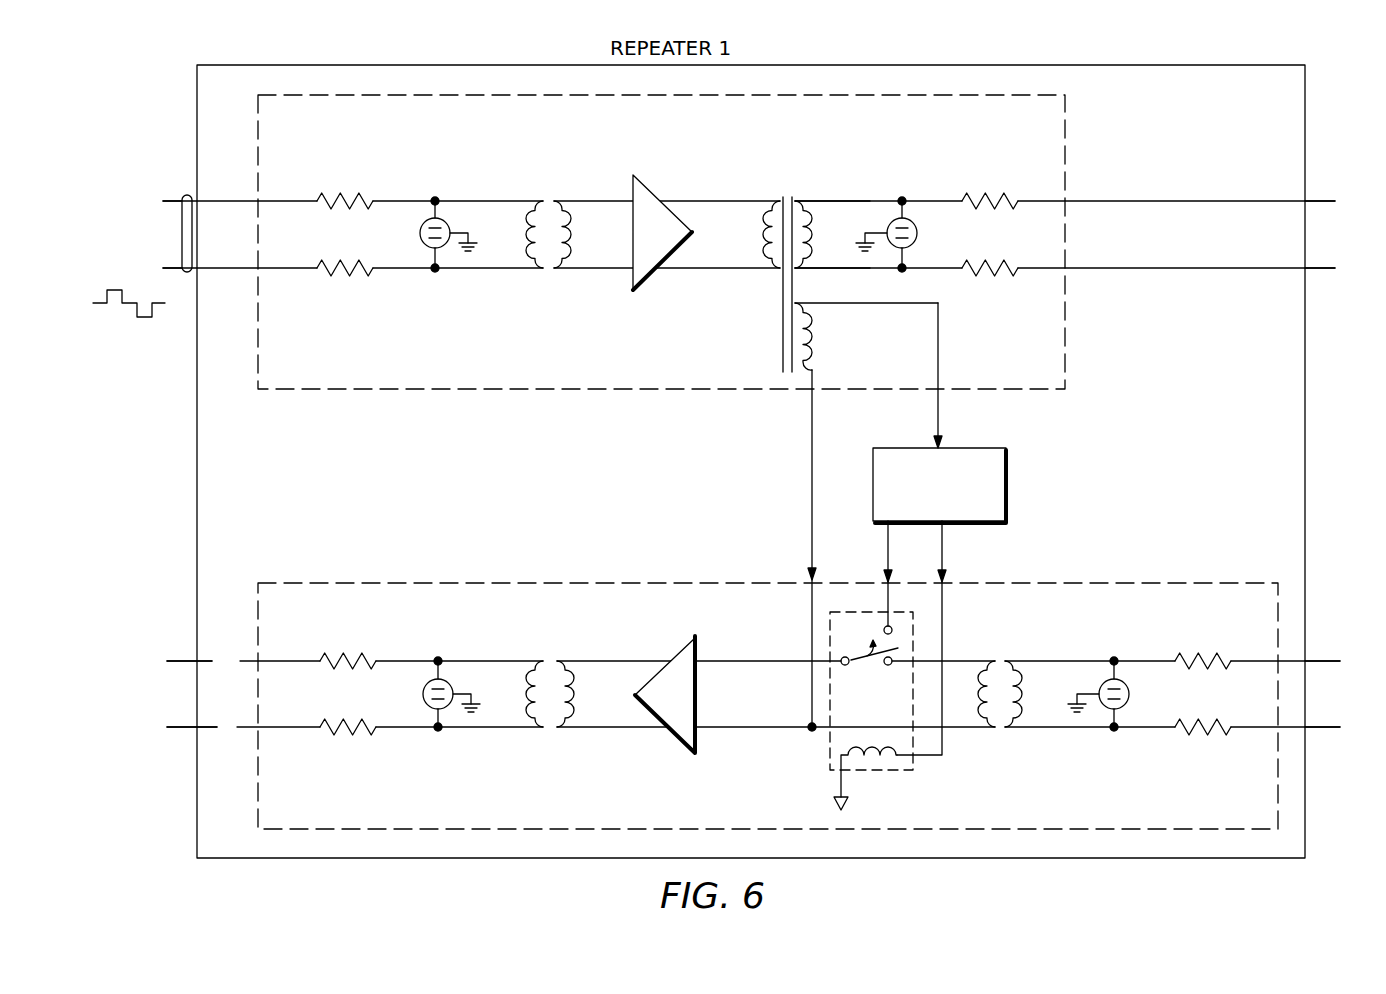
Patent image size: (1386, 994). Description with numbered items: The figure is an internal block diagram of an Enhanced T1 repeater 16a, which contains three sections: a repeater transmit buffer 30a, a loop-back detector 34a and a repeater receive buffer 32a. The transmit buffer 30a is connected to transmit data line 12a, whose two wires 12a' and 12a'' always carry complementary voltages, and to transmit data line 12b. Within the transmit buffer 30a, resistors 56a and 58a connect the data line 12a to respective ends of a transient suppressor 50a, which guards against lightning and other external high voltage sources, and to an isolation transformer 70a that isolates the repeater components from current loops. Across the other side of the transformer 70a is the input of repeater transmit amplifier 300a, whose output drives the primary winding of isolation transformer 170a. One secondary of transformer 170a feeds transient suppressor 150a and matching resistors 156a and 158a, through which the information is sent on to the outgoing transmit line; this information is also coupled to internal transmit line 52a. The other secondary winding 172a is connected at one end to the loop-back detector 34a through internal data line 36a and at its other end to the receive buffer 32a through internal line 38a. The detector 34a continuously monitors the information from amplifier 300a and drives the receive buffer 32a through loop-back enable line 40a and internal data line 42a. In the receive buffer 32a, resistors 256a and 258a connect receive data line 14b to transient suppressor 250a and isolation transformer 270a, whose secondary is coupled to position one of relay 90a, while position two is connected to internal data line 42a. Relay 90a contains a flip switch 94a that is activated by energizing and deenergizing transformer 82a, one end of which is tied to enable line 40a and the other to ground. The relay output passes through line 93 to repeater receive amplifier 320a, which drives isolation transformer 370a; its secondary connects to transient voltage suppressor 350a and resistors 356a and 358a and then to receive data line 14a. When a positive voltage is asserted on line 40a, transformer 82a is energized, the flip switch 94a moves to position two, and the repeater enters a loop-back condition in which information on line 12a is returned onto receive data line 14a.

The repeater 16a is at (1305, 115).
The transmit data line 12a is at (166, 206).
The wire 12a' is at (154, 187).
The wire 12a'' is at (152, 254).
The transmit data line 12b is at (1318, 268).
The receive data line 14a is at (178, 728).
The receive data line 14b is at (1320, 727).
The repeater transmit buffer 30a is at (1067, 128).
The repeater receive buffer 32a is at (458, 590).
The resistor 56a is at (338, 200).
The resistor 58a is at (338, 270).
The transient suppressor 50a is at (420, 233).
The isolation transformer 70a is at (559, 200).
The repeater transmit amplifier 300a is at (652, 275).
The isolation transformer 170a is at (801, 200).
The secondary winding 172a is at (818, 343).
The internal transmit line 52a is at (835, 268).
The transient suppressor 150a is at (917, 233).
The matching resistor 156a is at (1005, 196).
The matching resistor 158a is at (1000, 272).
The internal data line 36a is at (940, 430).
The internal line 38a is at (812, 508).
The loop-back detector 34a is at (1006, 490).
The internal data line 42a is at (886, 561).
The loop-back enable line 40a is at (943, 552).
The resistor 356a is at (341, 660).
The resistor 358a is at (341, 729).
The transient voltage suppressor 350a is at (423, 694).
The isolation transformer 370a is at (565, 660).
The repeater receive amplifier 320a is at (677, 743).
The line 93 is at (742, 663).
The relay 90a is at (896, 712).
The flip switch 94a is at (858, 652).
The transformer 82a is at (877, 758).
The isolation transformer 270a is at (1013, 660).
The transient suppressor 250a is at (1129, 694).
The resistor 256a is at (1216, 658).
The resistor 258a is at (1208, 730).